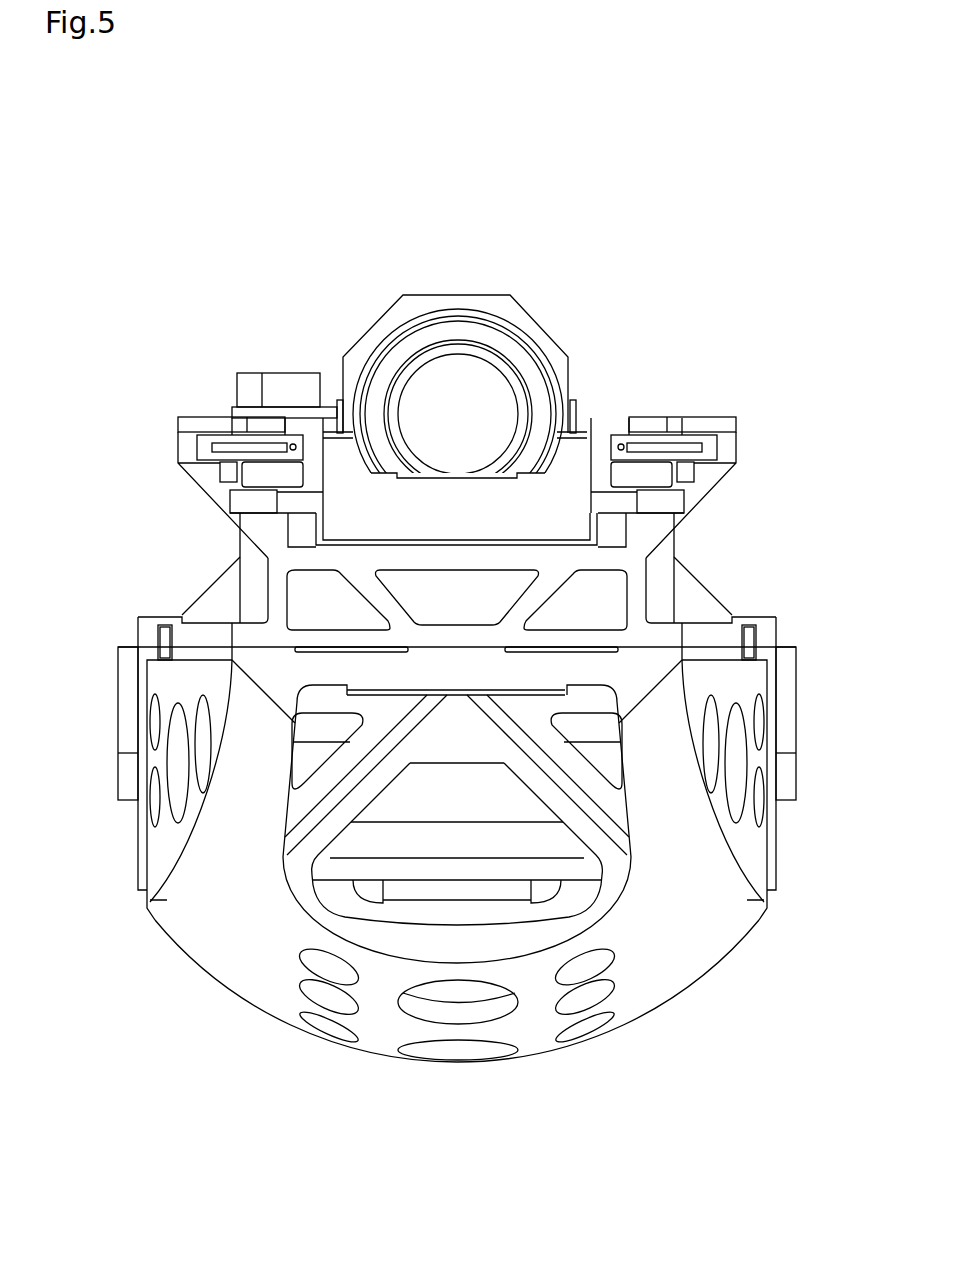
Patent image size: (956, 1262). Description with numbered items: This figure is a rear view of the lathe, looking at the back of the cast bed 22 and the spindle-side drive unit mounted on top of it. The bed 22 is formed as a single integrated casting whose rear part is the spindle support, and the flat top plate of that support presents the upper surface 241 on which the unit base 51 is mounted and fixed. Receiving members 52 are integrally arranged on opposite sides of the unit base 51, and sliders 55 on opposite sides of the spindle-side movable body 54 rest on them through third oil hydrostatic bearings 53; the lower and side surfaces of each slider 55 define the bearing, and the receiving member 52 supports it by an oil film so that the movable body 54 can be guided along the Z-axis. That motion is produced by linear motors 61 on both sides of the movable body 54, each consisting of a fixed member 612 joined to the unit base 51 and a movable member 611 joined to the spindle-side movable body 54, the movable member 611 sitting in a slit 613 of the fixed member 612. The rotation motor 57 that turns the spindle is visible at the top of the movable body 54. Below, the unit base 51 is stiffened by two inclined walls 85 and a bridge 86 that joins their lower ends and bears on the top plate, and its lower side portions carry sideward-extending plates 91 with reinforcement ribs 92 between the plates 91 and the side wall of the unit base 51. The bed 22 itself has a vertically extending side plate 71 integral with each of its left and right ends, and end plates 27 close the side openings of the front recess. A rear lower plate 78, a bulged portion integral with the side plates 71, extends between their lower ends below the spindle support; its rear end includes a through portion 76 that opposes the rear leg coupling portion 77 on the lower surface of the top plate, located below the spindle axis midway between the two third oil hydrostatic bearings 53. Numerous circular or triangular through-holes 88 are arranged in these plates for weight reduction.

The bed 22 is at (152, 927).
The end plate 27 is at (118, 683).
The unit base 51 is at (650, 532).
The receiving member 52 is at (190, 471).
The third oil hydrostatic bearing 53 is at (297, 507).
The spindle-side movable body 54 is at (418, 298).
The slider 55 is at (283, 502).
The rotation motor 57 is at (490, 383).
The linear motor 61 is at (202, 445).
The movable member 611 is at (268, 437).
The fixed member 612 is at (208, 433).
The slit 613 is at (252, 445).
The side plate 71 is at (153, 860).
The through portion 76 is at (605, 912).
The rear leg coupling portion 77 is at (387, 695).
The rear lower plate 78 is at (672, 965).
The inclined wall 85 is at (378, 598).
The bridge 86 is at (447, 633).
The through-hole 88 is at (153, 810).
The plate 91 is at (160, 633).
The reinforcement rib 92 is at (220, 578).
The upper surface 241 is at (713, 643).